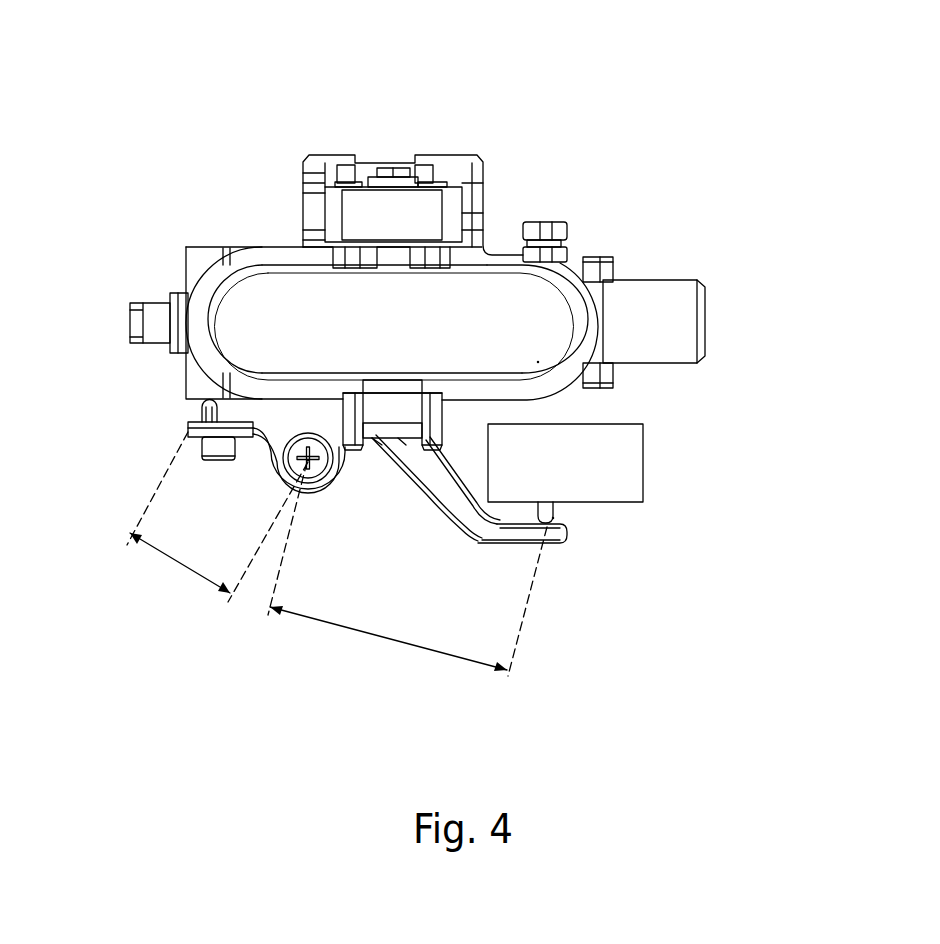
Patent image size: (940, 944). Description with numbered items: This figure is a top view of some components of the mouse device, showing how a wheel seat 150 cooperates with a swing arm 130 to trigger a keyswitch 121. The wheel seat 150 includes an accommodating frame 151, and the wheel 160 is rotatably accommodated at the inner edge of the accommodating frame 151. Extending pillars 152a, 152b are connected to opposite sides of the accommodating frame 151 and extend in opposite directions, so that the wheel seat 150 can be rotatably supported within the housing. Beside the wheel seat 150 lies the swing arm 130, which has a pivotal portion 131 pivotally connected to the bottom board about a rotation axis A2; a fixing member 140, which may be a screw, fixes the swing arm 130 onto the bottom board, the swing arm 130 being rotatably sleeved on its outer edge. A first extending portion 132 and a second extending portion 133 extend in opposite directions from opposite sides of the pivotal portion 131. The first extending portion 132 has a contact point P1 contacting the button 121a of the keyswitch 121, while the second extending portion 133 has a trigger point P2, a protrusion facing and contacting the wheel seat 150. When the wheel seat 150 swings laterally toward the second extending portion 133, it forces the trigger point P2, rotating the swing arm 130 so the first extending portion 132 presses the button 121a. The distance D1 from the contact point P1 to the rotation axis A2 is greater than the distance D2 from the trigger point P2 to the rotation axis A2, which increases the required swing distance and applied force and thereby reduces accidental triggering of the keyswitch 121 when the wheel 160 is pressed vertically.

The keyswitch 121 is at (632, 497).
The button 121a is at (557, 515).
The swing arm 130 is at (890, 47).
The pivotal portion 131 is at (337, 470).
The first extending portion 132 is at (448, 478).
The second extending portion 133 is at (187, 422).
The fixing member 140 is at (318, 474).
The wheel seat 150 is at (890, 150).
The accommodating frame 151 is at (258, 252).
The extending pillar 152a is at (648, 300).
The extending pillar 152b is at (157, 313).
The wheel 160 is at (538, 362).
The contact point P1 is at (553, 514).
The trigger point P2 is at (207, 404).
The first distance D1 is at (407, 570).
The second distance D2 is at (217, 517).
The rotation axis A2 is at (307, 467).